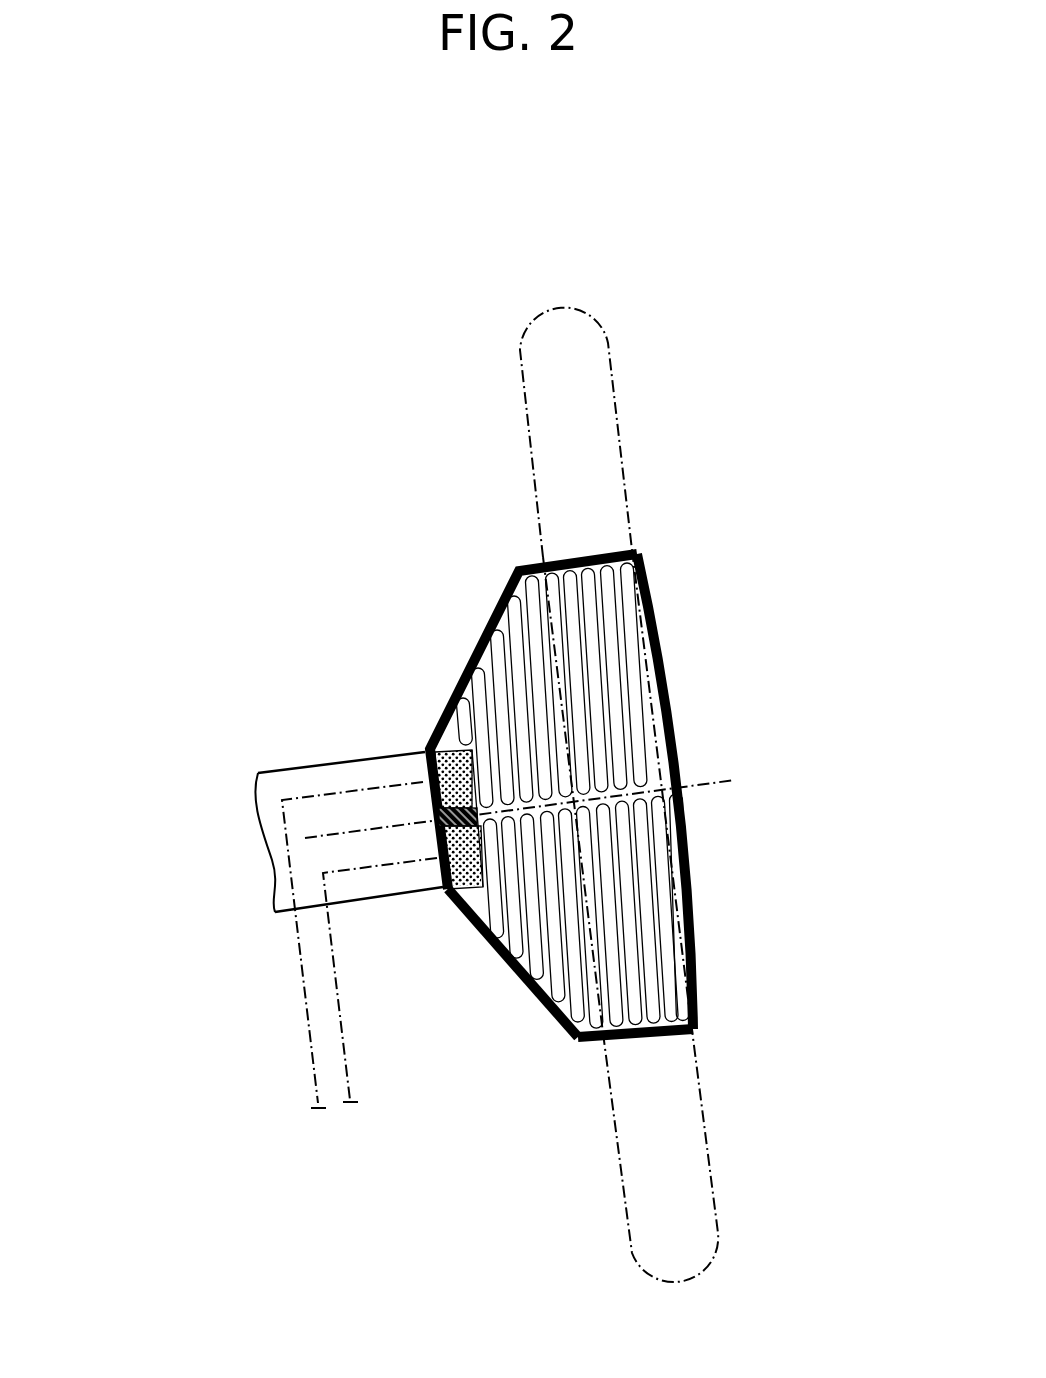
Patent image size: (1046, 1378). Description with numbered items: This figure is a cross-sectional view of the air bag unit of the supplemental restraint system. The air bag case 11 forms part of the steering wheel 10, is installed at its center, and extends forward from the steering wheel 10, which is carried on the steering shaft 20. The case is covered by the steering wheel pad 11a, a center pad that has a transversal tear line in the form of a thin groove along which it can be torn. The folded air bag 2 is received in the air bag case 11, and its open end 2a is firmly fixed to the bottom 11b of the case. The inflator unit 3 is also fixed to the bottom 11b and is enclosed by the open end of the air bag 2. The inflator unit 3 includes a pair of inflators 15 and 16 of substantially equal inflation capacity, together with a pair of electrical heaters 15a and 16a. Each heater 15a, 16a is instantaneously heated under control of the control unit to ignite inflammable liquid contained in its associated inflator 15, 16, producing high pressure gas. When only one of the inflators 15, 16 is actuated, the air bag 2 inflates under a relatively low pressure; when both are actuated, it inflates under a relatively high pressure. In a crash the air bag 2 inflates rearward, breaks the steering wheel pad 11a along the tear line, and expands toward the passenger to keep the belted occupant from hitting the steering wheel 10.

The air bag 2 is at (627, 642).
The open end 2a is at (443, 743).
The inflator unit 3 is at (432, 808).
The steering wheel 10 is at (620, 445).
The air bag case 11 is at (607, 552).
The steering wheel pad 11a is at (682, 730).
The bottom 11b is at (435, 882).
The inflator 15 is at (455, 912).
The electrical heater 15a is at (447, 905).
The inflator 16 is at (423, 752).
The electrical heater 16a is at (423, 770).
The steering shaft 20 is at (268, 773).